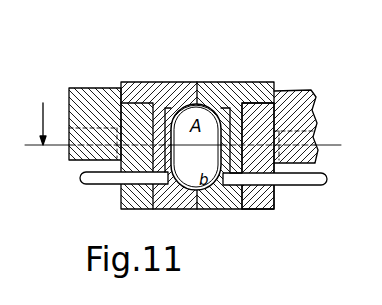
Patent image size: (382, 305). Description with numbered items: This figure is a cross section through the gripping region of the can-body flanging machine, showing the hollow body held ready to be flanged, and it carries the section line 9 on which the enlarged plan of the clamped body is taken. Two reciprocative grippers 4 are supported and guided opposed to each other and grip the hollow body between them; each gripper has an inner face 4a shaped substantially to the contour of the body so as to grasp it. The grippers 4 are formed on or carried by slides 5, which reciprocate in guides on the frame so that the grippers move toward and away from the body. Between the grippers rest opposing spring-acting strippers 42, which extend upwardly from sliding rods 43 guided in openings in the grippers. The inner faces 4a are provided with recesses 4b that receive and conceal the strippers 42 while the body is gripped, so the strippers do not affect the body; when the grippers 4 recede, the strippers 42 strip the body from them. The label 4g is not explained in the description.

The reciprocative gripper 4 is at (173, 97).
The inner face 4a is at (213, 101).
The recess 4b is at (233, 125).
The lining top portion 4g is at (188, 100).
The slide 5 is at (80, 92).
The section line 9 9 is at (183, 129).
The spring-acting stripper 42 is at (256, 115).
The sliding rod 43 is at (98, 177).